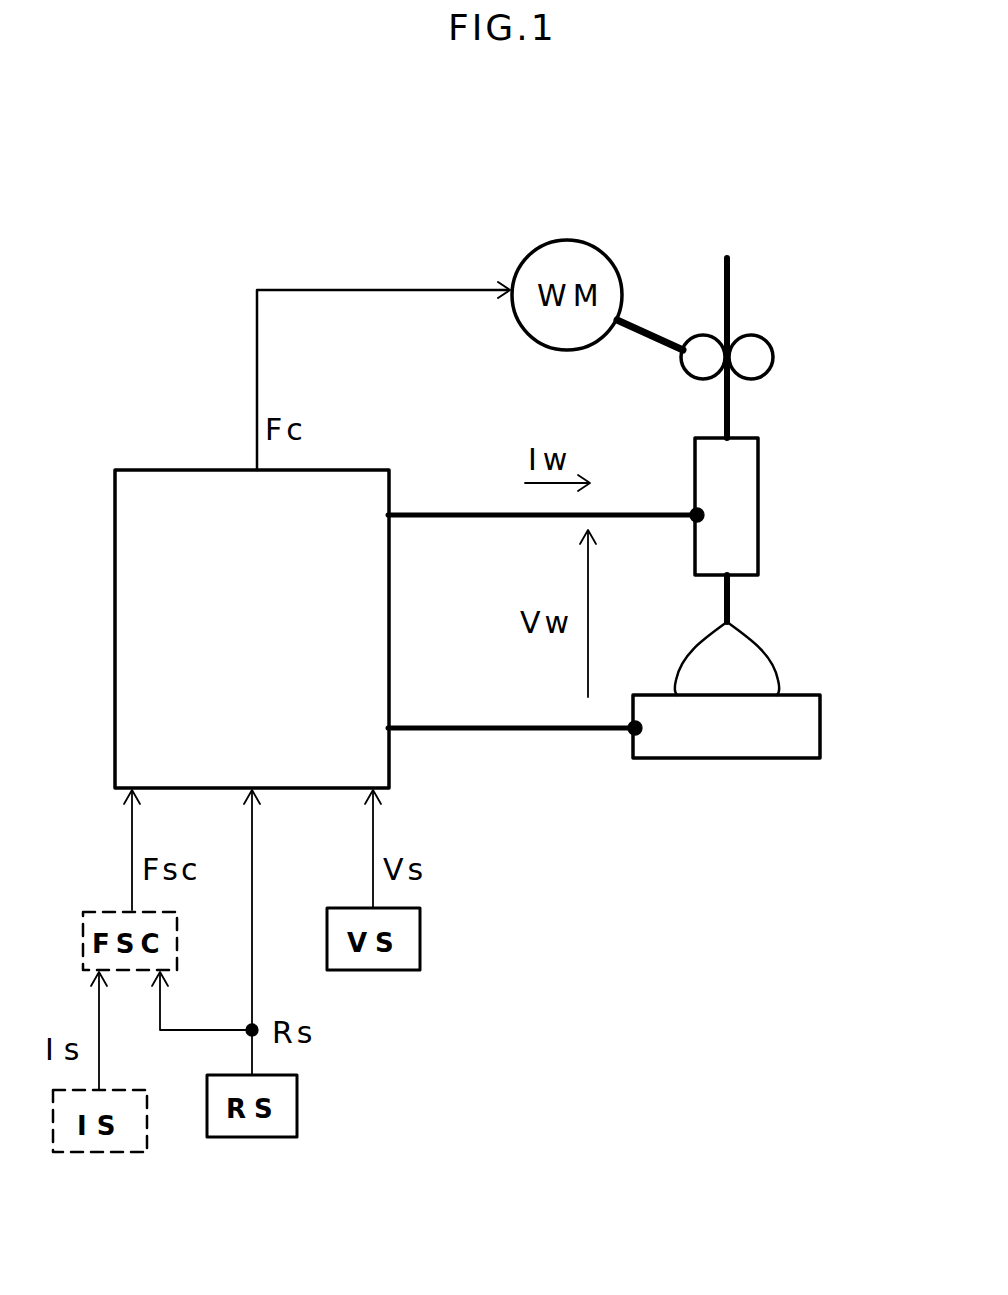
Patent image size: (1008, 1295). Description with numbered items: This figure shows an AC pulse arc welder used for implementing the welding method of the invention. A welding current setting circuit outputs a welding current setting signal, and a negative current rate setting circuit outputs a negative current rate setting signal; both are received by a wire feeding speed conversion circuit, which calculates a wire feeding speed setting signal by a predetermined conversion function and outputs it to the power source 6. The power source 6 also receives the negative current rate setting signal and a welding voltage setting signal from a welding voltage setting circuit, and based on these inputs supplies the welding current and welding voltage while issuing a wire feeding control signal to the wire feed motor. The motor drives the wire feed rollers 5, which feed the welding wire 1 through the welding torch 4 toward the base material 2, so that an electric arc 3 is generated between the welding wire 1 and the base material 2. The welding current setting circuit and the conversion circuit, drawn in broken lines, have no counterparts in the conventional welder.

The welding wire 1 is at (731, 604).
The base material 2 is at (805, 693).
The electric arc 3 is at (760, 650).
The welding torch 4 is at (758, 497).
The wire feed rollers 5 is at (775, 352).
The power source 6 is at (147, 470).